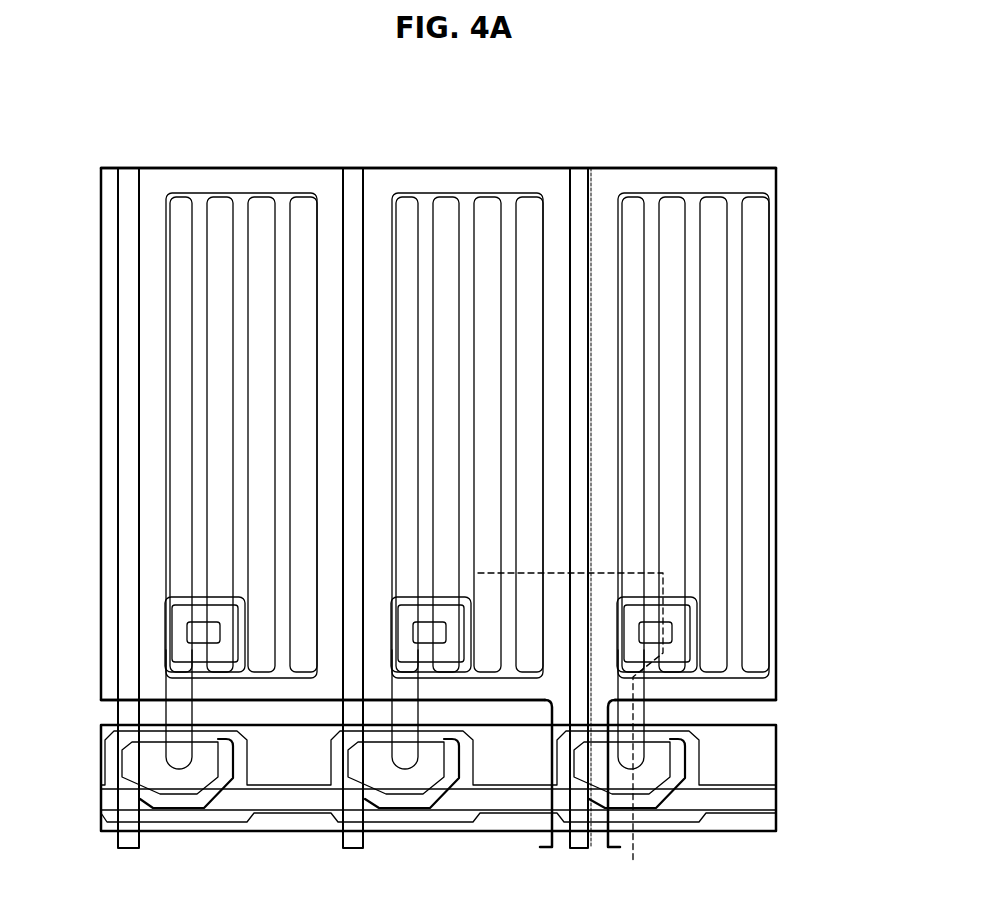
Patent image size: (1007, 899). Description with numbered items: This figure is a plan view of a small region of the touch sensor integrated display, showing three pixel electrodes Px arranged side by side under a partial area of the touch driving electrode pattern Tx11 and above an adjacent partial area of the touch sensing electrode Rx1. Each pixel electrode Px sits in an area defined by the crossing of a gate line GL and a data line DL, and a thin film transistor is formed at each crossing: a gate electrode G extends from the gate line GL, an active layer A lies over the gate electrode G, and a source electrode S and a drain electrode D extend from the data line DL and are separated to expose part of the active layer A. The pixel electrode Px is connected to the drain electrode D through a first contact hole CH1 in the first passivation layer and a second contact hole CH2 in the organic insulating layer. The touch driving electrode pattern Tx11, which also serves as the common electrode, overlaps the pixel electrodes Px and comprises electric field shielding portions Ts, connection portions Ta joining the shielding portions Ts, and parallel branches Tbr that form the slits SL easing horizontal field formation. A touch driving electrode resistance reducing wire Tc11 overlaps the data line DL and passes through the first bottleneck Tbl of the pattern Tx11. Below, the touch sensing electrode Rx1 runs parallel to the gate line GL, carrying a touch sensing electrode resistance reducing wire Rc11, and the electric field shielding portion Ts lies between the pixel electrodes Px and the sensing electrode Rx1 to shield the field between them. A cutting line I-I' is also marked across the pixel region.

The touch driving electrode pattern Tx11 is at (742, 167).
The electric field shielding portion Ts is at (757, 183).
The data line DL is at (125, 183).
The touch driving electrode resistance reducing wire Tc11 is at (583, 180).
The pixel electrode Px is at (492, 401).
The slit SL is at (447, 210).
The connection portion Ta is at (598, 330).
The branch Tbr is at (735, 378).
The second contact hole CH2 is at (187, 627).
The first contact hole CH1 is at (172, 647).
The drain electrode D is at (165, 712).
The touch sensing electrode Rx1 is at (755, 758).
The gate electrode G is at (703, 735).
The active layer A is at (220, 800).
The source electrode S is at (238, 790).
The gate line GL is at (755, 787).
The touch sensing electrode resistance reducing wire Rc11 is at (755, 807).
The first bottleneck Tbl is at (553, 712).
The section line I is at (587, 721).
The section line I' is at (488, 605).